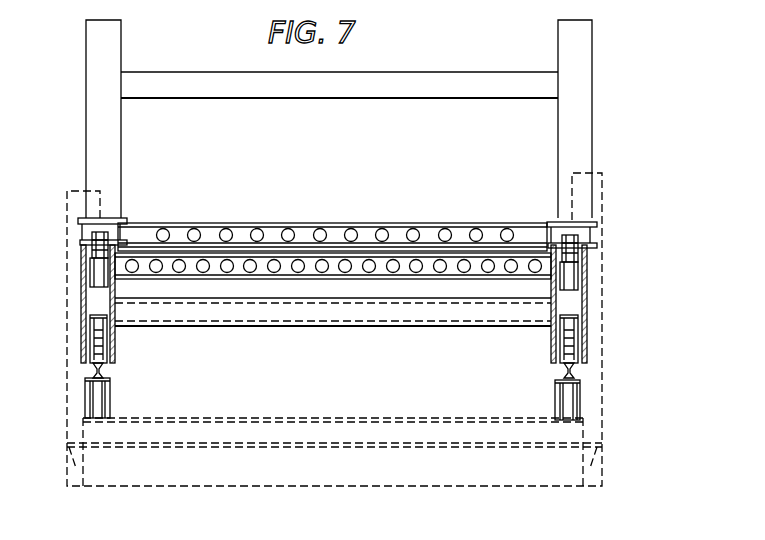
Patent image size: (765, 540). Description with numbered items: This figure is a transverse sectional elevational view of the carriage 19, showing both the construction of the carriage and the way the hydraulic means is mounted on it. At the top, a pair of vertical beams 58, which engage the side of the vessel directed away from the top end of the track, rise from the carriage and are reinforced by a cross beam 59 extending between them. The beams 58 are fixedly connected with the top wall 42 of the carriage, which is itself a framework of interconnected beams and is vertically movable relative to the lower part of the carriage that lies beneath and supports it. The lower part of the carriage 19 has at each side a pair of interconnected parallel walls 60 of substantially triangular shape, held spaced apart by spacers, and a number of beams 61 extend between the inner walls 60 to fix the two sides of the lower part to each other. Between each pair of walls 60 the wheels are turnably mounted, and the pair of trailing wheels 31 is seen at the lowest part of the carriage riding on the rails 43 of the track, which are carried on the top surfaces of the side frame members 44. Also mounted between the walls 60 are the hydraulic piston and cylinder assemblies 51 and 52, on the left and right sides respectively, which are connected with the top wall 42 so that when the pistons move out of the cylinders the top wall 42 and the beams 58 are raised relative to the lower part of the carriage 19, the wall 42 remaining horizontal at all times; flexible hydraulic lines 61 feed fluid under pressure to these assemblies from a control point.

The carriage 19 is at (60, 351).
The trailing wheels 31 is at (95, 345).
The top wall 42 is at (340, 232).
The rails 43 is at (100, 370).
The side frame members 44 is at (110, 402).
The hydraulic piston and cylinder assembly 51 is at (100, 247).
The hydraulic piston and cylinder assembly 52 is at (590, 263).
The vertical beams 58 is at (100, 122).
The cross beam 59 is at (470, 83).
The walls 60 is at (83, 298).
The beams 61 is at (352, 318).